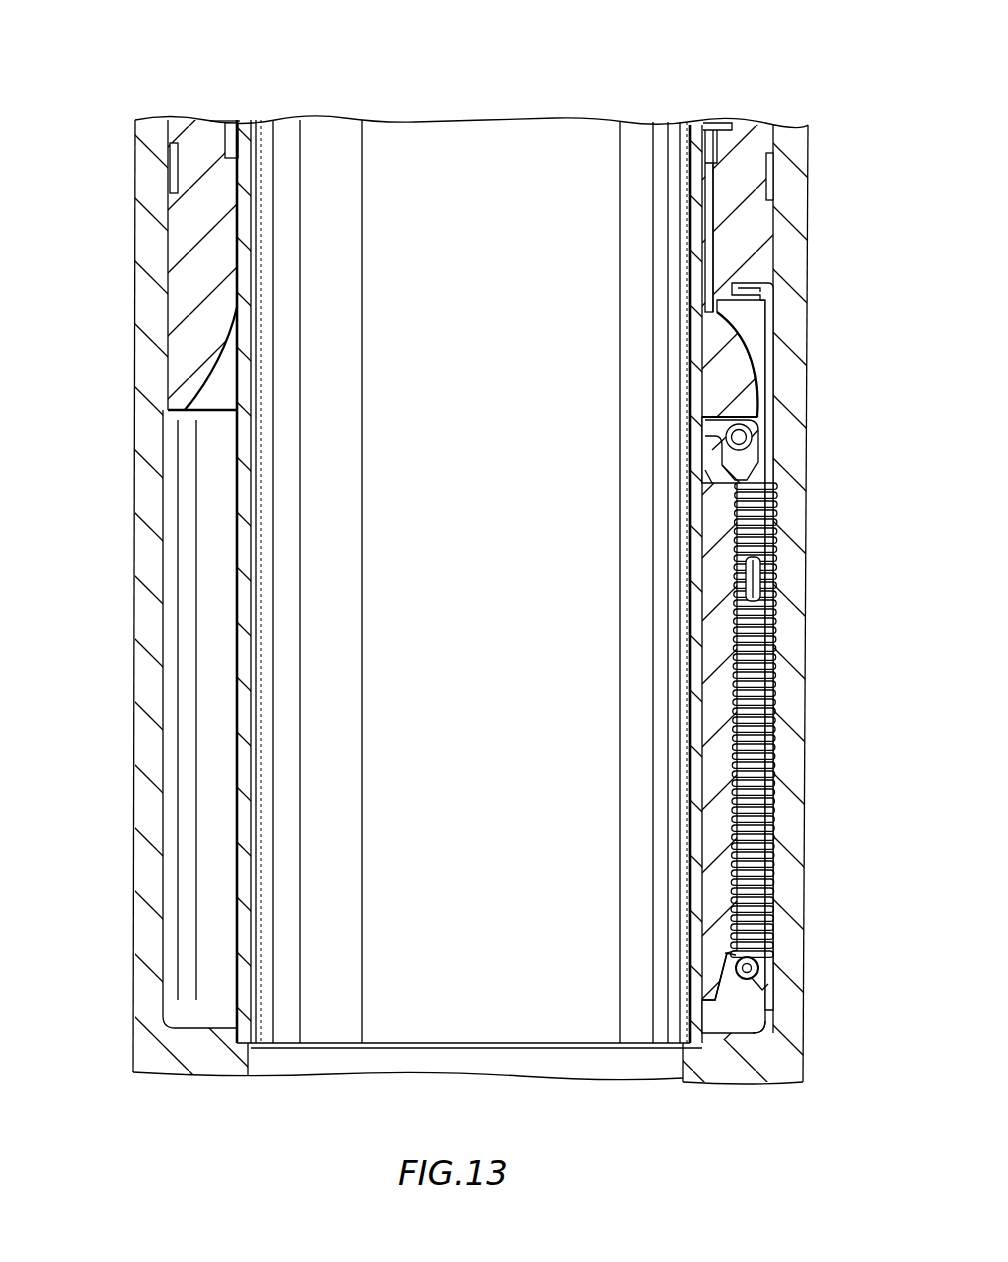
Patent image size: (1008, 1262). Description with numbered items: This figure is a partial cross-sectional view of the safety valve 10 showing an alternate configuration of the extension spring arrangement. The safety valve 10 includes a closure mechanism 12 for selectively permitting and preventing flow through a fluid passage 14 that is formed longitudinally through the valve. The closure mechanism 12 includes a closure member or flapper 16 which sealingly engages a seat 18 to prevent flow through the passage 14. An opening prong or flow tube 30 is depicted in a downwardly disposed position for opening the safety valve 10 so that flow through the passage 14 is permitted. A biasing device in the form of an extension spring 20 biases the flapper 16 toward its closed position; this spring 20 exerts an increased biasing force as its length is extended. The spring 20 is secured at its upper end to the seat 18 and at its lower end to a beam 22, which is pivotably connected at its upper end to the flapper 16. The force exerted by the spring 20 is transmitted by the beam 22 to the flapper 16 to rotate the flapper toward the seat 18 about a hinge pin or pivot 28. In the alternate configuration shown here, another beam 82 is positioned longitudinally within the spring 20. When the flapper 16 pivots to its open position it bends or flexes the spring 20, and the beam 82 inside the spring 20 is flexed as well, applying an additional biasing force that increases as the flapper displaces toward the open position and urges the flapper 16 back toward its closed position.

The safety valve 10 is at (480, 550).
The closure mechanism 12 is at (787, 738).
The fluid passage 14 is at (425, 487).
The flapper 16 is at (700, 972).
The seat 18 is at (197, 368).
The extension spring 20 is at (770, 855).
The beam 22 is at (727, 523).
The hinge pin 28 is at (758, 432).
The flow tube 30 is at (240, 780).
The beam 82 is at (735, 592).